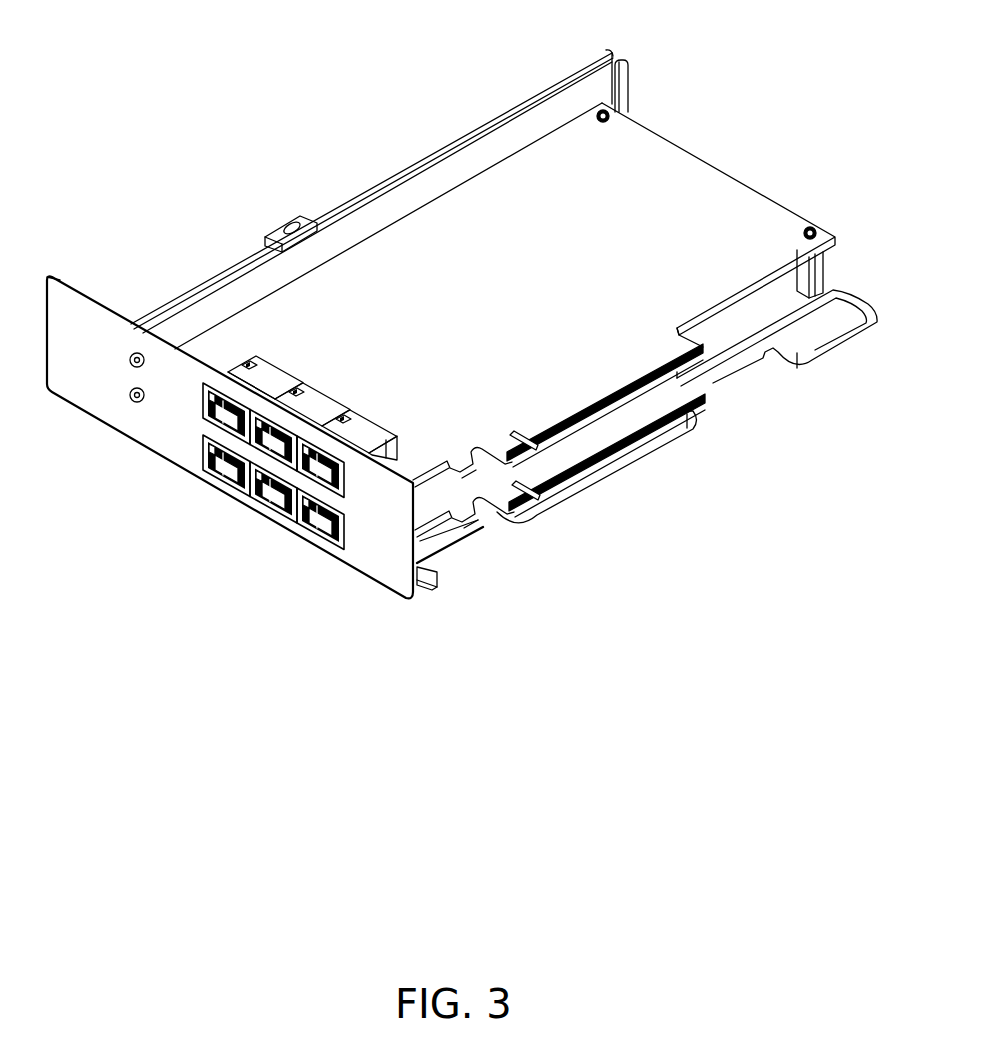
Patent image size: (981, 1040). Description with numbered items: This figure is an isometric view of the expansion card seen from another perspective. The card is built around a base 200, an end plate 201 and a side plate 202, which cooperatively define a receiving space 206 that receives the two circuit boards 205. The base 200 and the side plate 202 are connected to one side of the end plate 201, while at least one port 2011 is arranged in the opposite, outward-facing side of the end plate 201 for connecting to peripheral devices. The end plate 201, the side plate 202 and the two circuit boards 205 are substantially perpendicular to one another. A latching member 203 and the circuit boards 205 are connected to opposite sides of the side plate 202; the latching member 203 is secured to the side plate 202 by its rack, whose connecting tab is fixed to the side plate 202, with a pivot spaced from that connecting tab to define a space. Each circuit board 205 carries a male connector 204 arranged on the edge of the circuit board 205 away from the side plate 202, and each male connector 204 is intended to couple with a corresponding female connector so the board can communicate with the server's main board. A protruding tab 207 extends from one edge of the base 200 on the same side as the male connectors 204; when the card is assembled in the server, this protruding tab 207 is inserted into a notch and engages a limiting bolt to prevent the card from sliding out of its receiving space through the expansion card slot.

The base 200 is at (813, 325).
The end plate 201 is at (375, 552).
The port 2011 is at (223, 473).
The side plate 202 is at (541, 123).
The latching member 203 is at (280, 237).
The male connector 204 is at (703, 398).
The circuit board 205 is at (664, 198).
The receiving space 206 is at (650, 115).
The protruding tab 207 is at (432, 582).